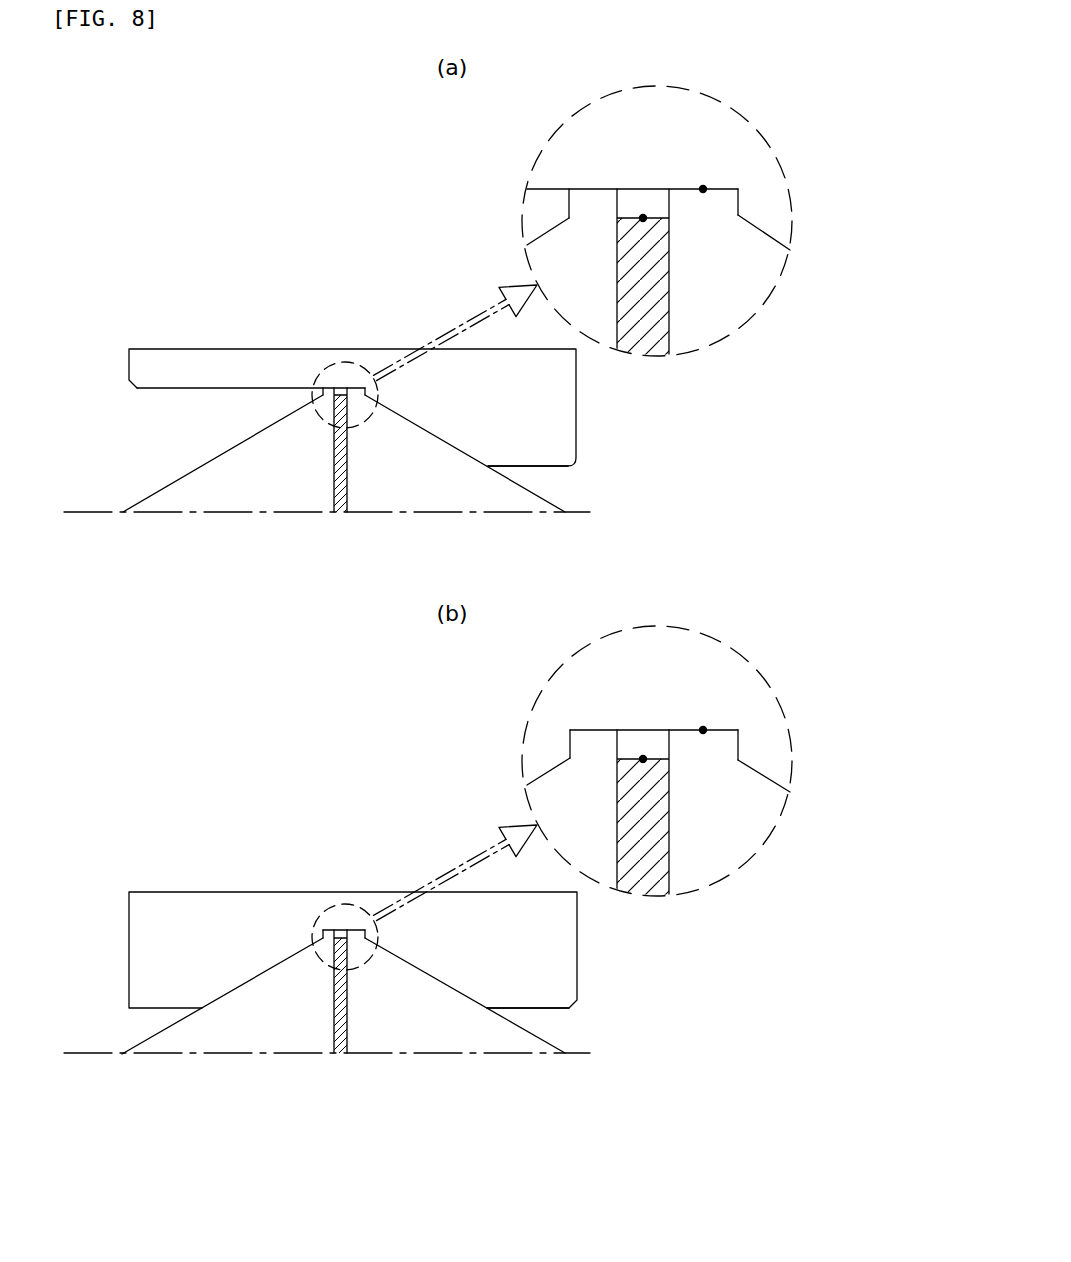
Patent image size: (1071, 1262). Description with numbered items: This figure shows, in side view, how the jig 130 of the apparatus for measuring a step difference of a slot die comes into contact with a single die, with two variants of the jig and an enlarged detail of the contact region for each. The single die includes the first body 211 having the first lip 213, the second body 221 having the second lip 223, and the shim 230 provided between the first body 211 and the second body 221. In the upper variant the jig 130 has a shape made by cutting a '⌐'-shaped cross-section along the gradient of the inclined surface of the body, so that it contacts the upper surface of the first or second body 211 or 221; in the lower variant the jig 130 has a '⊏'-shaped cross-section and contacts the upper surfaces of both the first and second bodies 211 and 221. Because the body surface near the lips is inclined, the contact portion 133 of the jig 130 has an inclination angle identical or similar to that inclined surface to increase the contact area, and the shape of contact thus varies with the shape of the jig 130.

The jig 130 is at (230, 362).
The contact portion 133 is at (462, 448).
The first body 211 is at (223, 473).
The first lip 213 is at (590, 197).
The second body 221 is at (443, 483).
The second lip 223 is at (722, 203).
The shim 230 is at (340, 513).